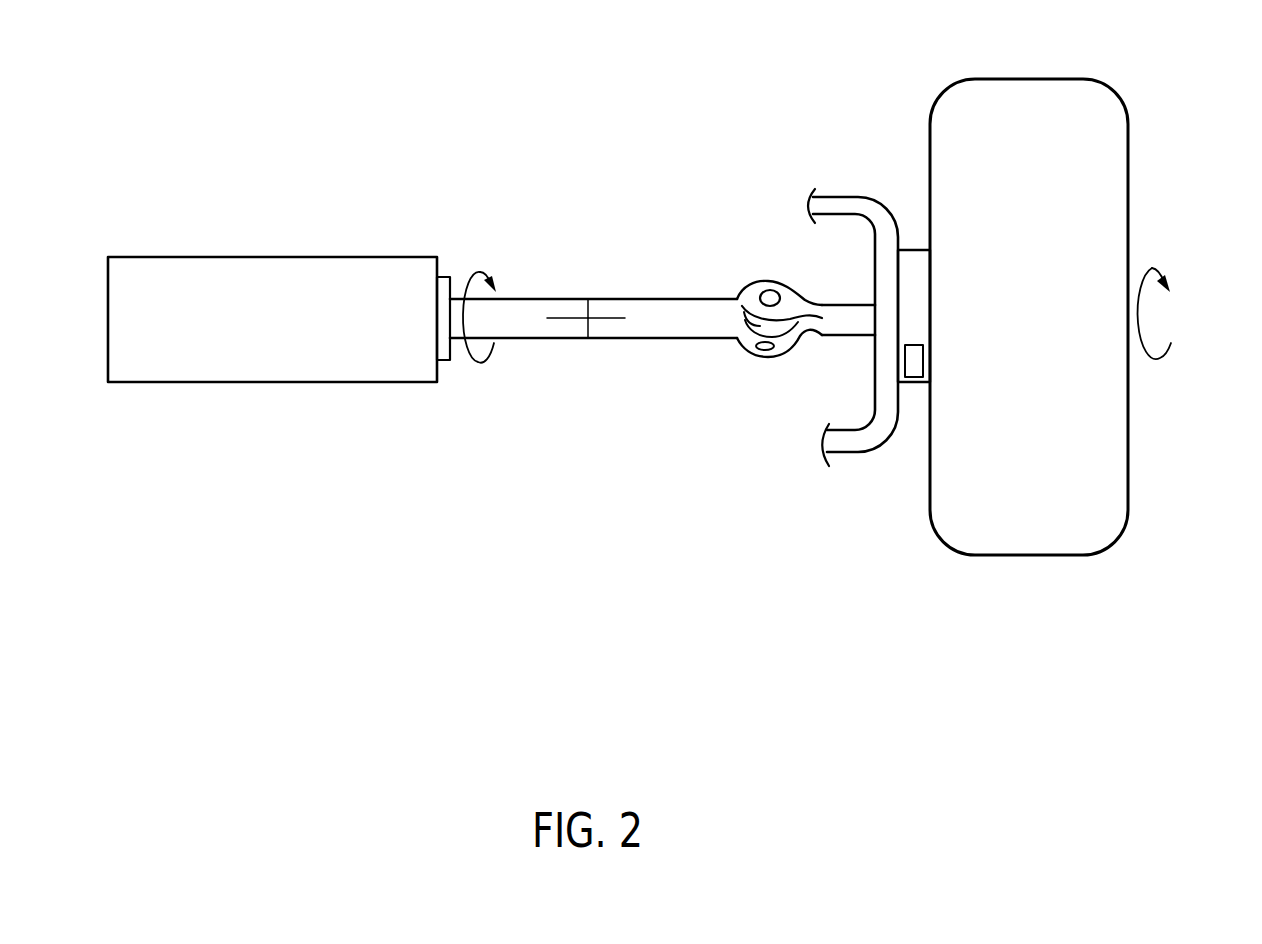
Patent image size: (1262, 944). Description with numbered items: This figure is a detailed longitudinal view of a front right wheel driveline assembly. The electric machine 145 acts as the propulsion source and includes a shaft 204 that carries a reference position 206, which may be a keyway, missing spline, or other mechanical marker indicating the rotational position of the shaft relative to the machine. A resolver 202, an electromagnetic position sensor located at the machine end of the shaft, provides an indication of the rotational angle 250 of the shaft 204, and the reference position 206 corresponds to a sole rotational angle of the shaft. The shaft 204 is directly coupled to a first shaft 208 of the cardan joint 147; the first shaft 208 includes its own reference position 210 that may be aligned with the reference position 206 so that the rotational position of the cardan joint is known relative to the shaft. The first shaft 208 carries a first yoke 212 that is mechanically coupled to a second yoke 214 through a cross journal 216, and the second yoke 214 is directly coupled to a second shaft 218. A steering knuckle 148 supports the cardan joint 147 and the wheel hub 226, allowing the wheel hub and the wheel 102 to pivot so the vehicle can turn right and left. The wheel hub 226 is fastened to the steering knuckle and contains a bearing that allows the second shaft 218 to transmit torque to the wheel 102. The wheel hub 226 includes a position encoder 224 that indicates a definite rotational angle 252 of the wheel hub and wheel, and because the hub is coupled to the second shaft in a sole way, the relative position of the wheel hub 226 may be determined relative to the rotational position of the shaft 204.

The wheel 102 is at (1062, 556).
The electric machine 145 is at (286, 329).
The cardan joint 147 is at (757, 326).
The steering knuckle 148 is at (860, 197).
The resolver 202 is at (450, 277).
The shaft 204 is at (508, 330).
The reference position 206 is at (565, 318).
The first shaft 208 is at (621, 299).
The reference position 210 is at (607, 318).
The first yoke 212 is at (750, 358).
The second yoke 214 is at (786, 283).
The cross journal 216 is at (792, 357).
The second shaft 218 is at (836, 305).
The position encoder 224 is at (914, 362).
The wheel hub 226 is at (911, 250).
The rotational angle 250 is at (480, 270).
The rotational angle 252 is at (1152, 268).